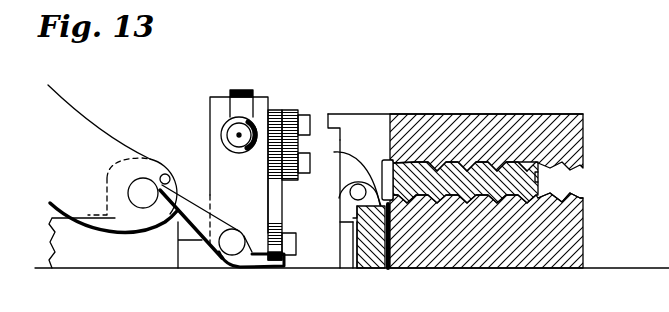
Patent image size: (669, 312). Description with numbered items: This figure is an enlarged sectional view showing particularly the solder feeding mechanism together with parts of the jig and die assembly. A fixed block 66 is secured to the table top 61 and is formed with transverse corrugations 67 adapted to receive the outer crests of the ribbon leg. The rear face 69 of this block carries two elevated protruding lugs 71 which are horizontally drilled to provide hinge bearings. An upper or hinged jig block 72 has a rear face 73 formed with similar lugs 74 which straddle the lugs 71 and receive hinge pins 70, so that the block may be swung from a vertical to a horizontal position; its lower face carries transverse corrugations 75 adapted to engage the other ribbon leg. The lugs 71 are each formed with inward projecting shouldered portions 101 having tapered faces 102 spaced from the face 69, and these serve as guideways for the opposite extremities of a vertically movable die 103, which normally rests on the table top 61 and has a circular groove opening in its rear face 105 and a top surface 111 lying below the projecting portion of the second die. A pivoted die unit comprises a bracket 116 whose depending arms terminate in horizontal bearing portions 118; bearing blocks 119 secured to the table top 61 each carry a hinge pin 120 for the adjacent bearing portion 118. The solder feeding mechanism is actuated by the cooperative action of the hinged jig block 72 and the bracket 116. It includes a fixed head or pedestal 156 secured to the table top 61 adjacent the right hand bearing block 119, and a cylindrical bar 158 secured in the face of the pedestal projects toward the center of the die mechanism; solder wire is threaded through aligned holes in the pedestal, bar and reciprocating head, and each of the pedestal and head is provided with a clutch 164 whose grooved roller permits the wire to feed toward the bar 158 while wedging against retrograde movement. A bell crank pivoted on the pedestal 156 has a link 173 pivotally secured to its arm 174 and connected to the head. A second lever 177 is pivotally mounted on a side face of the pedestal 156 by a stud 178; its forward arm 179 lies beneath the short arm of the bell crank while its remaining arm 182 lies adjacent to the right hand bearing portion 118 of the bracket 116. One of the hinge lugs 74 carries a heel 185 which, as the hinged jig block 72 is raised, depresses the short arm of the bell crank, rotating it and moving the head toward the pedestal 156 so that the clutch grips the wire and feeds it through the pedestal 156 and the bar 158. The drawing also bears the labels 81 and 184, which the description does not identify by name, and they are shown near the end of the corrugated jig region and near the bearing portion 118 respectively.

The table top 61 is at (638, 268).
The block 66 is at (585, 223).
The transverse corrugations 67 is at (570, 196).
The rear face 69 is at (394, 232).
The hinge pins 70 is at (356, 192).
The lugs 71 is at (339, 207).
The hinged jig block 72 is at (584, 131).
The rear face 73 is at (386, 116).
The lugs 74 is at (348, 126).
The transverse corrugations 75 is at (580, 166).
The screw end 81 is at (541, 178).
The shouldered portions 101 is at (342, 256).
The tapered faces 102 is at (353, 236).
The vertically movable die 103 is at (367, 262).
The rear face 105 is at (353, 218).
The top surface 111 is at (349, 174).
The bracket 116 is at (63, 111).
The bearing portions 118 is at (149, 158).
The bearing blocks 119 is at (62, 250).
The hinge pin 120 is at (142, 192).
The pedestal 156 is at (239, 170).
The cylindrical bar 158 is at (221, 126).
The clutch 164 is at (243, 91).
The link 173 is at (292, 108).
The arm 174 is at (276, 108).
The second lever 177 is at (208, 249).
The stud 178 is at (216, 259).
The forward arm 179 is at (270, 259).
The arm 182 is at (160, 224).
The pin 184 is at (192, 167).
The heel 185 is at (330, 114).